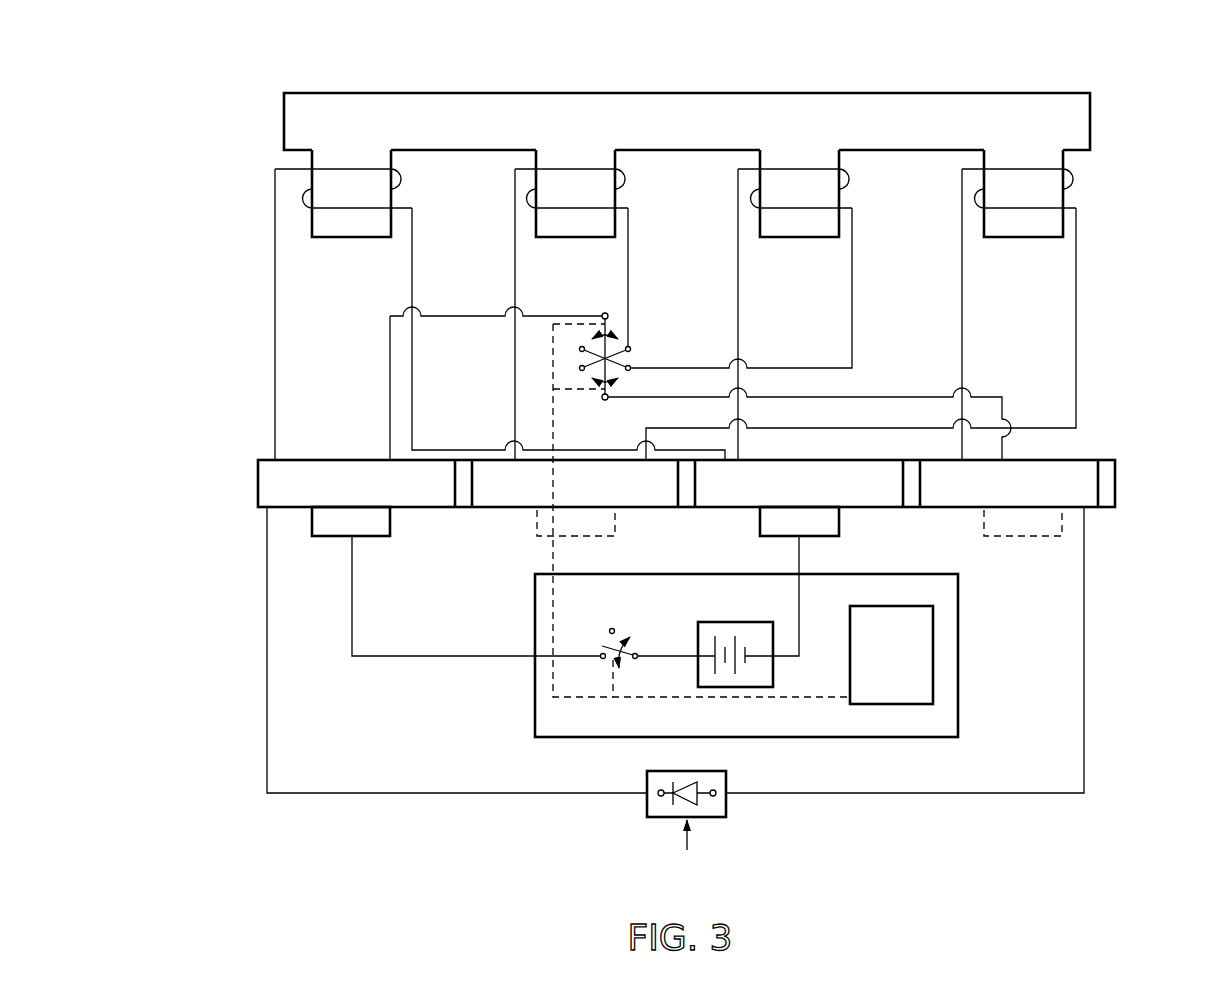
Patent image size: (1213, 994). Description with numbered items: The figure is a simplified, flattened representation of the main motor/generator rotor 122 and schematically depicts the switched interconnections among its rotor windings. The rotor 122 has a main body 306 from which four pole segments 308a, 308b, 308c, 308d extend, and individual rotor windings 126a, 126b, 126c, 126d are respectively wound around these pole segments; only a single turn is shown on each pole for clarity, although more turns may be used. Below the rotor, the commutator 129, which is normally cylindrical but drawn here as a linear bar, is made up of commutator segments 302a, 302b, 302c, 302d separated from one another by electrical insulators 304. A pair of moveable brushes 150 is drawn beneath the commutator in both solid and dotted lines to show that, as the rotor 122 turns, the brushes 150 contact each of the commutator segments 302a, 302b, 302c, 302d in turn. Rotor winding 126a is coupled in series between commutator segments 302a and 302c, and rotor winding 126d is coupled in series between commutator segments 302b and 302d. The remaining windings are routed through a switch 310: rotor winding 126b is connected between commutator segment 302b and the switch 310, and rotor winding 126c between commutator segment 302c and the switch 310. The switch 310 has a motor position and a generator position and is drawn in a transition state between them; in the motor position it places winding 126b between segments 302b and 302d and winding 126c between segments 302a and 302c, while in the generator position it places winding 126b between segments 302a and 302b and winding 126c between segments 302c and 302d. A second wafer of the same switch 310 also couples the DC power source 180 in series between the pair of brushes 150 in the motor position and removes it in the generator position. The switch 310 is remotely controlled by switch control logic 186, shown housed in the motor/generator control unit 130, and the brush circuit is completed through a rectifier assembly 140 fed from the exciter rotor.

The main motor/generator rotor 122 is at (1095, 81).
The main body 306 is at (687, 121).
The pole segment 308a is at (352, 238).
The pole segment 308b is at (572, 238).
The pole segment 308c is at (800, 238).
The pole segment 308d is at (1025, 238).
The rotor winding 126a is at (422, 158).
The rotor winding 126b is at (646, 158).
The rotor winding 126c is at (868, 158).
The rotor winding 126d is at (1092, 158).
The switch 310 is at (647, 328).
The commutator 129 is at (243, 483).
The commutator segment 302a is at (356, 483).
The commutator segment 302b is at (575, 483).
The commutator segment 302c is at (799, 483).
The commutator segment 302d is at (1009, 483).
The electrical insulator 304 is at (457, 508).
The moveable brushes 150 is at (375, 538).
The motor/generator control unit 130 is at (958, 712).
The DC power source 180 is at (773, 676).
The switch control logic 186 is at (933, 626).
The rectifier assembly 140 is at (726, 776).